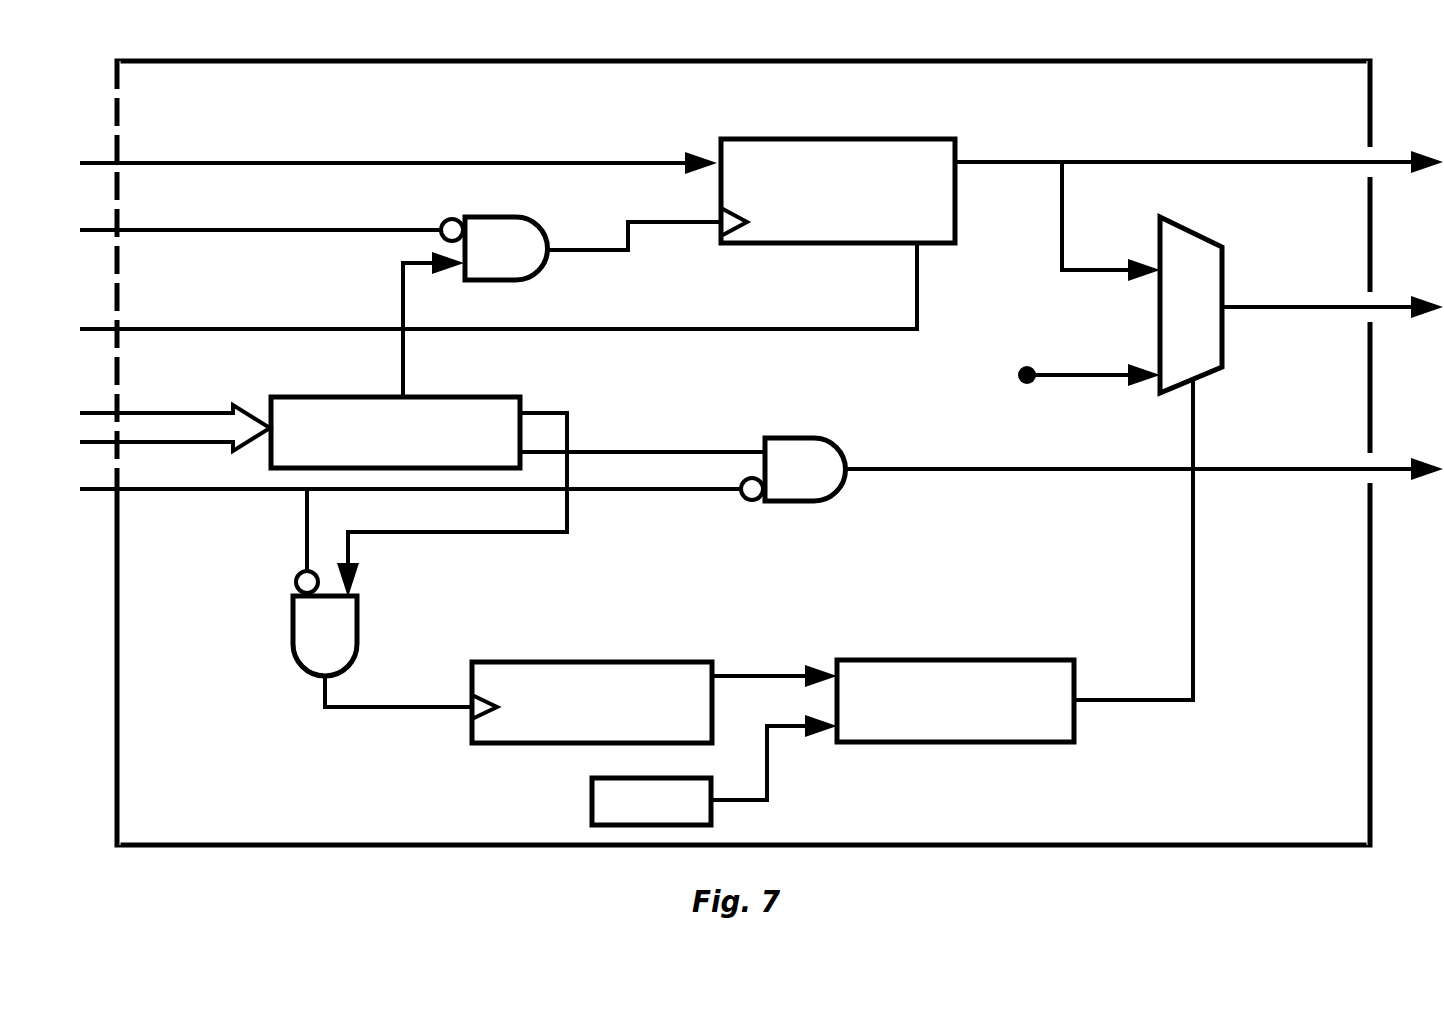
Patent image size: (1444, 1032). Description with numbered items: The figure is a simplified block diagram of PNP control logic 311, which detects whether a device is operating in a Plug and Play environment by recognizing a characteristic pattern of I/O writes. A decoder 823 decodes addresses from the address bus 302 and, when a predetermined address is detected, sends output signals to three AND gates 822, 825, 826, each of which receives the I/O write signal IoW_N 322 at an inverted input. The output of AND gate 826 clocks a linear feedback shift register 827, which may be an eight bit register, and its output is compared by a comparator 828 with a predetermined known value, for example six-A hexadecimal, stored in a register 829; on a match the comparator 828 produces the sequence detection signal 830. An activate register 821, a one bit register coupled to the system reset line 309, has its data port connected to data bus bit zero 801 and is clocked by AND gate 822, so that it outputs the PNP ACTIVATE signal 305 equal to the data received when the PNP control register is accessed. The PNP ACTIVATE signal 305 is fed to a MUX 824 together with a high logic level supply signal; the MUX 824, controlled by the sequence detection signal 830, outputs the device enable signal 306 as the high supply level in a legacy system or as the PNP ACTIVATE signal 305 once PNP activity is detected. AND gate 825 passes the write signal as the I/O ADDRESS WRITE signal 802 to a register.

The DATA BUS(0) 801 is at (385, 163).
The I/O write signal IoW_N 322 is at (395, 230).
The system reset line 309 is at (130, 329).
The address bus 302 is at (145, 413).
The activate register 821 is at (848, 139).
The AND gate 822 is at (545, 225).
The decoder 823 is at (480, 397).
The MUX 824 is at (1218, 243).
The AND gate 825 is at (830, 440).
The AND gate 826 is at (360, 630).
The linear feedback shift register 827 is at (630, 662).
The comparator 828 is at (980, 660).
The register 829 is at (592, 798).
The sequence detection signal 830 is at (1195, 652).
The PNP ACTIVATE signal 305 is at (1300, 162).
The device enable signal 306 is at (1330, 307).
The I/O ADDRESS WRITE signal 802 is at (1312, 469).
The PNP control logic 311 is at (1248, 845).